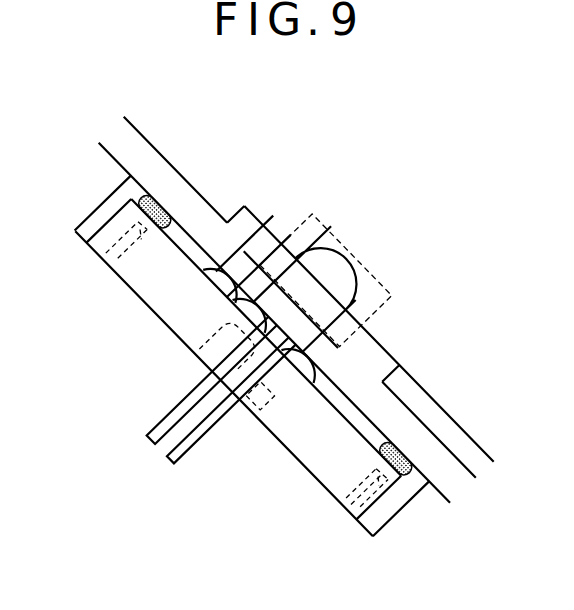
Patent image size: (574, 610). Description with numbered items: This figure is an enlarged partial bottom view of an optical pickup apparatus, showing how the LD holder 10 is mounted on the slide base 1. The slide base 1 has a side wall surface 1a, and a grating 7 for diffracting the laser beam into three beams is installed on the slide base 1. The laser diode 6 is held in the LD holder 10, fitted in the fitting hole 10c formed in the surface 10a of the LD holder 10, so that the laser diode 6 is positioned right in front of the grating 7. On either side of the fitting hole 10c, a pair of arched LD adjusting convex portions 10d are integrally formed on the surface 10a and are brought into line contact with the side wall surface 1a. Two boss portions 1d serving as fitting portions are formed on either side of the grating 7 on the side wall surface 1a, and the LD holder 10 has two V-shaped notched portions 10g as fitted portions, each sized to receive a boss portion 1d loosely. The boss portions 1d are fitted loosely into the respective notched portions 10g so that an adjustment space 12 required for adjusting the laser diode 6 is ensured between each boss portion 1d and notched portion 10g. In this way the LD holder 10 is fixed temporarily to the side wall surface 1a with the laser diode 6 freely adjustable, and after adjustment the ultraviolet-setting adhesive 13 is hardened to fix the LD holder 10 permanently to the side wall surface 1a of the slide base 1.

The slide base 1 is at (284, 346).
The side wall surface 1a is at (271, 346).
The boss portion 1d is at (248, 377).
The laser diode 6 is at (214, 365).
The grating 7 is at (312, 280).
The LD holder 10 is at (271, 357).
The surface 10a is at (320, 297).
The fitting hole 10c is at (221, 399).
The LD adjusting convex portion 10d is at (333, 276).
The notched portion 10g is at (231, 383).
The adjustment space 12 is at (213, 393).
The ultraviolet-setting adhesive 13 is at (327, 299).